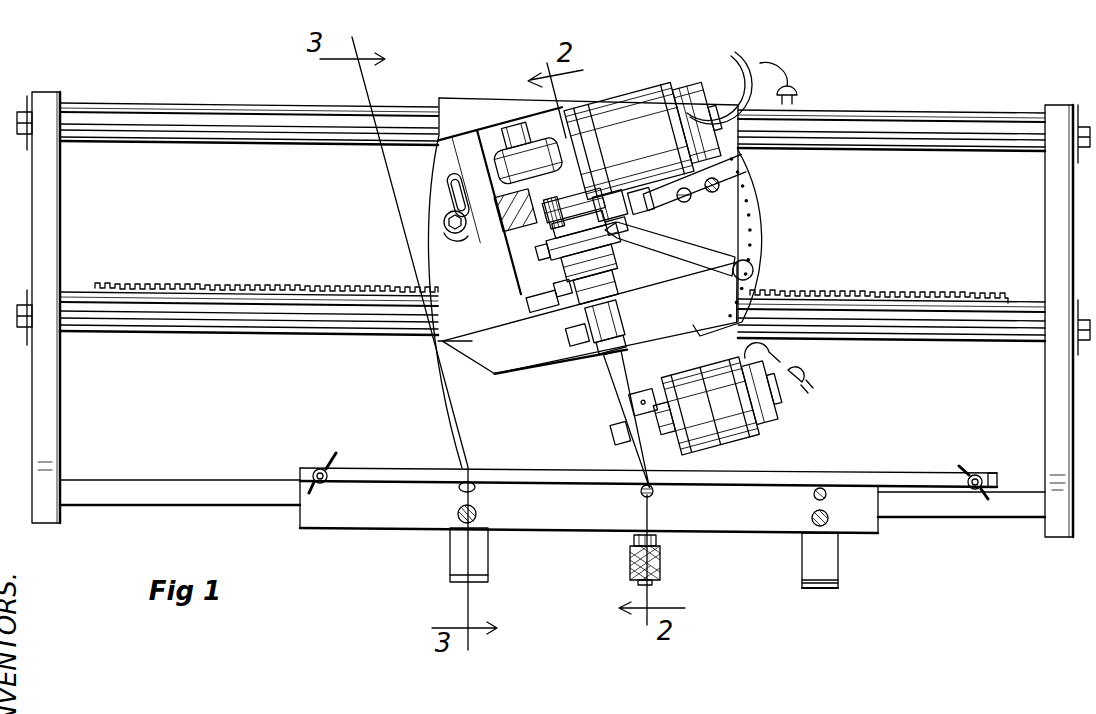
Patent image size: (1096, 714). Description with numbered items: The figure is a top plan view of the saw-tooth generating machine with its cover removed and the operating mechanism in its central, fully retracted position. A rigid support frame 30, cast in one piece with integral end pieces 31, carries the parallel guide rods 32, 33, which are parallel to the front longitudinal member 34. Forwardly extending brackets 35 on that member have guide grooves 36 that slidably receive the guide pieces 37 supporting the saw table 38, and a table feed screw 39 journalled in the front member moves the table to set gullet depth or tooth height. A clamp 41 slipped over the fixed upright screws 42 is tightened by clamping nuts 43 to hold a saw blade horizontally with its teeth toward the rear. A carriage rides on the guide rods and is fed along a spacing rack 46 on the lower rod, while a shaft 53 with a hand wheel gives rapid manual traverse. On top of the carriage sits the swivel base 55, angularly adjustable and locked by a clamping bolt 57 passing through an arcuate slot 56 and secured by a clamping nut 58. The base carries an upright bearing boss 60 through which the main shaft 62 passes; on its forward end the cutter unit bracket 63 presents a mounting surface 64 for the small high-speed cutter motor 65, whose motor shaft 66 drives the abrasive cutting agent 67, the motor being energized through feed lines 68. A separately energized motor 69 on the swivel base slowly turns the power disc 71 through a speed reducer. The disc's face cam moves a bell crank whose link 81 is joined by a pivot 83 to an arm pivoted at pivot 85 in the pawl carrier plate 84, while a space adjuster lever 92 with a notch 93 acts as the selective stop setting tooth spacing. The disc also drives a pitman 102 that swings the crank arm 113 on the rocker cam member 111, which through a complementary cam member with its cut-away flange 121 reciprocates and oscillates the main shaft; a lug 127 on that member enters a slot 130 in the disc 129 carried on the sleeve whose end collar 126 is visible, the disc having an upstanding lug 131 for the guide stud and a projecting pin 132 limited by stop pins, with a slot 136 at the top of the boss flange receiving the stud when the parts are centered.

The support frame 30 is at (553, 348).
The end pieces 31 is at (60, 207).
The guide rod 32 is at (1003, 343).
The guide rod 33 is at (983, 150).
The front longitudinal member 34 is at (90, 490).
The brackets 35 is at (838, 585).
The guide grooves 36 is at (820, 588).
The guide pieces 37 is at (488, 552).
The saw table 38 is at (713, 510).
The table feed screw 39 is at (660, 563).
The clamp 41 is at (537, 475).
The upright screws 42 is at (312, 470).
The clamping nuts 43 is at (333, 453).
The spacing rack 46 is at (907, 293).
The shaft 53 is at (565, 270).
The swivel base 55 is at (456, 130).
The arcuate slot 56 is at (450, 200).
The clamping bolt 57 is at (446, 228).
The clamping nut 58 is at (450, 240).
The bearing boss 60 is at (627, 302).
The main shaft 62 is at (597, 329).
The cutter unit bracket 63 is at (617, 385).
The mounting surface 64 is at (640, 408).
The cutter motor 65 is at (742, 437).
The motor shaft 66 is at (623, 433).
The cutting agent 67 is at (637, 447).
The feed lines 68 is at (776, 358).
The motor 69 is at (632, 113).
The power disc 71 is at (502, 217).
The link 81 is at (640, 203).
The pivot 83 is at (676, 203).
The pawl carrier plate 84 is at (617, 226).
The pivot 85 is at (612, 205).
The space adjuster lever 92 is at (740, 253).
The notch 93 is at (627, 232).
The pitman 102 is at (528, 235).
The rocker cam member 111 is at (563, 287).
The crank arm 113 is at (547, 247).
The flange 121 is at (447, 340).
The end collar 126 is at (630, 337).
The lug 127 is at (543, 303).
The disc 129 is at (679, 260).
The slot 130 is at (590, 290).
The upstanding lug 131 is at (578, 335).
The projecting pin 132 is at (493, 368).
The slot 136 is at (607, 345).